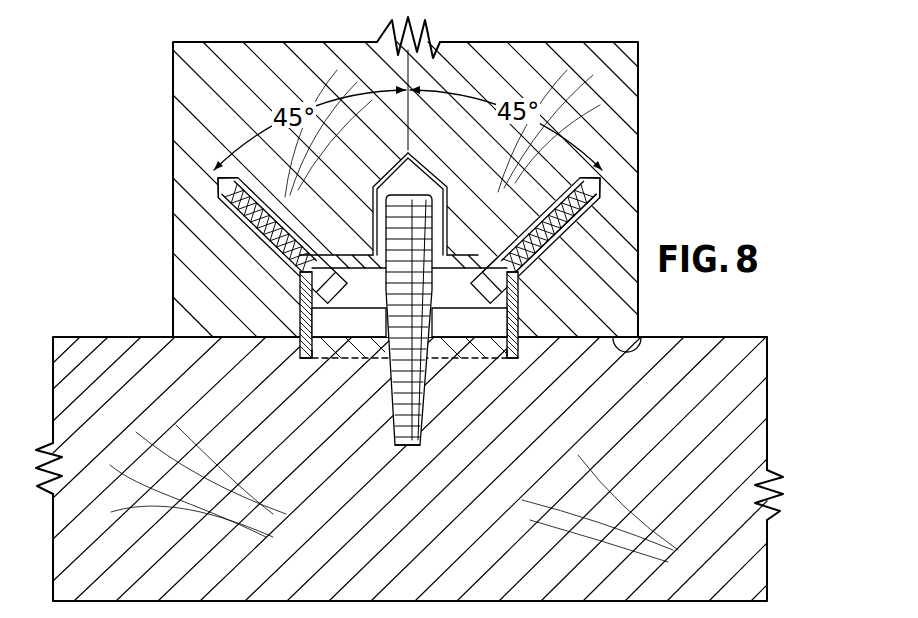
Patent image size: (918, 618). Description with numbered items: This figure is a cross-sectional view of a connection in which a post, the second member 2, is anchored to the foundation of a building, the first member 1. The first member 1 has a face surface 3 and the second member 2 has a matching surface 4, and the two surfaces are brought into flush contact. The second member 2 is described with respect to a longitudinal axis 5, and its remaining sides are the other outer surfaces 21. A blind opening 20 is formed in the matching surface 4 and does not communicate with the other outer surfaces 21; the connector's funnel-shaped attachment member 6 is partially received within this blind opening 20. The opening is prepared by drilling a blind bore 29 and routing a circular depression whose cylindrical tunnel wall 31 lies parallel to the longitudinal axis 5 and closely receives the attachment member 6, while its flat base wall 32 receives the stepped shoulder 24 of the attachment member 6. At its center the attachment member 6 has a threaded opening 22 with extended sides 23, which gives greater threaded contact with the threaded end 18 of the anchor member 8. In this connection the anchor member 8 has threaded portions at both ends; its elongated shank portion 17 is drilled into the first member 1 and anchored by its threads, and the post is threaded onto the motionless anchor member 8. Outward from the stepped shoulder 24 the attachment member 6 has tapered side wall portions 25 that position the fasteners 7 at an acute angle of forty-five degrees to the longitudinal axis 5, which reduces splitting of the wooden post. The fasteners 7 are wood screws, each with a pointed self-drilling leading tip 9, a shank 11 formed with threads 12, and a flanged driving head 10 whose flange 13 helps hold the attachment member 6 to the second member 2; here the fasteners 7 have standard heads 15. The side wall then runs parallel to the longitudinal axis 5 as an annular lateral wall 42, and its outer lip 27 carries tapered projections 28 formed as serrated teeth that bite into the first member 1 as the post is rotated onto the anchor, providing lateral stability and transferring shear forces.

The first member 1 is at (770, 363).
The second member 2 is at (640, 118).
The face surface 3 is at (716, 337).
The matching surface 4 is at (645, 345).
The longitudinal axis 5 is at (412, 80).
The attachment member 6 is at (293, 360).
The fasteners 7 is at (221, 199).
The anchor member 8 is at (388, 396).
The leading tips 9 is at (218, 176).
The driving heads 10 is at (333, 304).
The shank 11 is at (553, 246).
The threads 12 is at (533, 218).
The flange 13 is at (297, 294).
The standard heads 15 is at (266, 364).
The elongated shank portion 17 is at (430, 385).
The threaded end 18 is at (444, 192).
The blind opening 20 is at (298, 286).
The other outer surfaces 21 is at (173, 72).
The threaded opening 22 is at (377, 206).
The extended sides 23 is at (447, 240).
The stepped shoulder 24 is at (350, 258).
The tapered side wall portions 25 is at (327, 258).
The outer lip 27 is at (512, 365).
The projections 28 is at (337, 362).
The blind bore 29 is at (420, 160).
The tunnel wall 31 is at (515, 288).
The base wall 32 is at (486, 265).
The lateral wall 42 is at (523, 310).